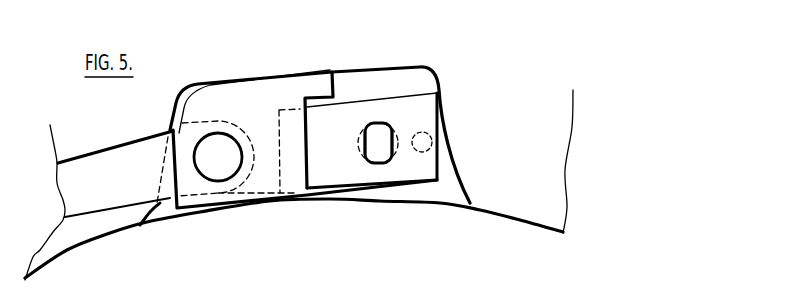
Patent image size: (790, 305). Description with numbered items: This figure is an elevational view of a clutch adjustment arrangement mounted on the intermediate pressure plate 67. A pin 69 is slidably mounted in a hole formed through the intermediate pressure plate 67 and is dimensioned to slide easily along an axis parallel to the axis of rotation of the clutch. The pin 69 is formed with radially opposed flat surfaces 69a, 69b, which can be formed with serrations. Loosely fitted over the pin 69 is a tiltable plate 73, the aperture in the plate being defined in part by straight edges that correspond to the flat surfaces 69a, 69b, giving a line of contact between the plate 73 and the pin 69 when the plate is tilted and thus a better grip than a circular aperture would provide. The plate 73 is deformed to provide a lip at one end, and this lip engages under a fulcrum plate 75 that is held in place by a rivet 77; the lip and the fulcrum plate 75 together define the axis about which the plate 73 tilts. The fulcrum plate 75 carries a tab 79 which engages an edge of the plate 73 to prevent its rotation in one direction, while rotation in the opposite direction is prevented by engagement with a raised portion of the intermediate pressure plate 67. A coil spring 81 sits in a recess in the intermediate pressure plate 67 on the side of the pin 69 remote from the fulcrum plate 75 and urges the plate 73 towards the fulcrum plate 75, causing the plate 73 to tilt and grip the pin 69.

The intermediate pressure plate 67 is at (385, 200).
The pin 69 is at (378, 140).
The flat surface 69a is at (365, 142).
The flat surface 69b is at (395, 143).
The tiltable plate 73 is at (325, 163).
The fulcrum plate 75 is at (280, 97).
The rivet 77 is at (218, 181).
The tab 79 is at (320, 88).
The coil spring 81 is at (433, 137).